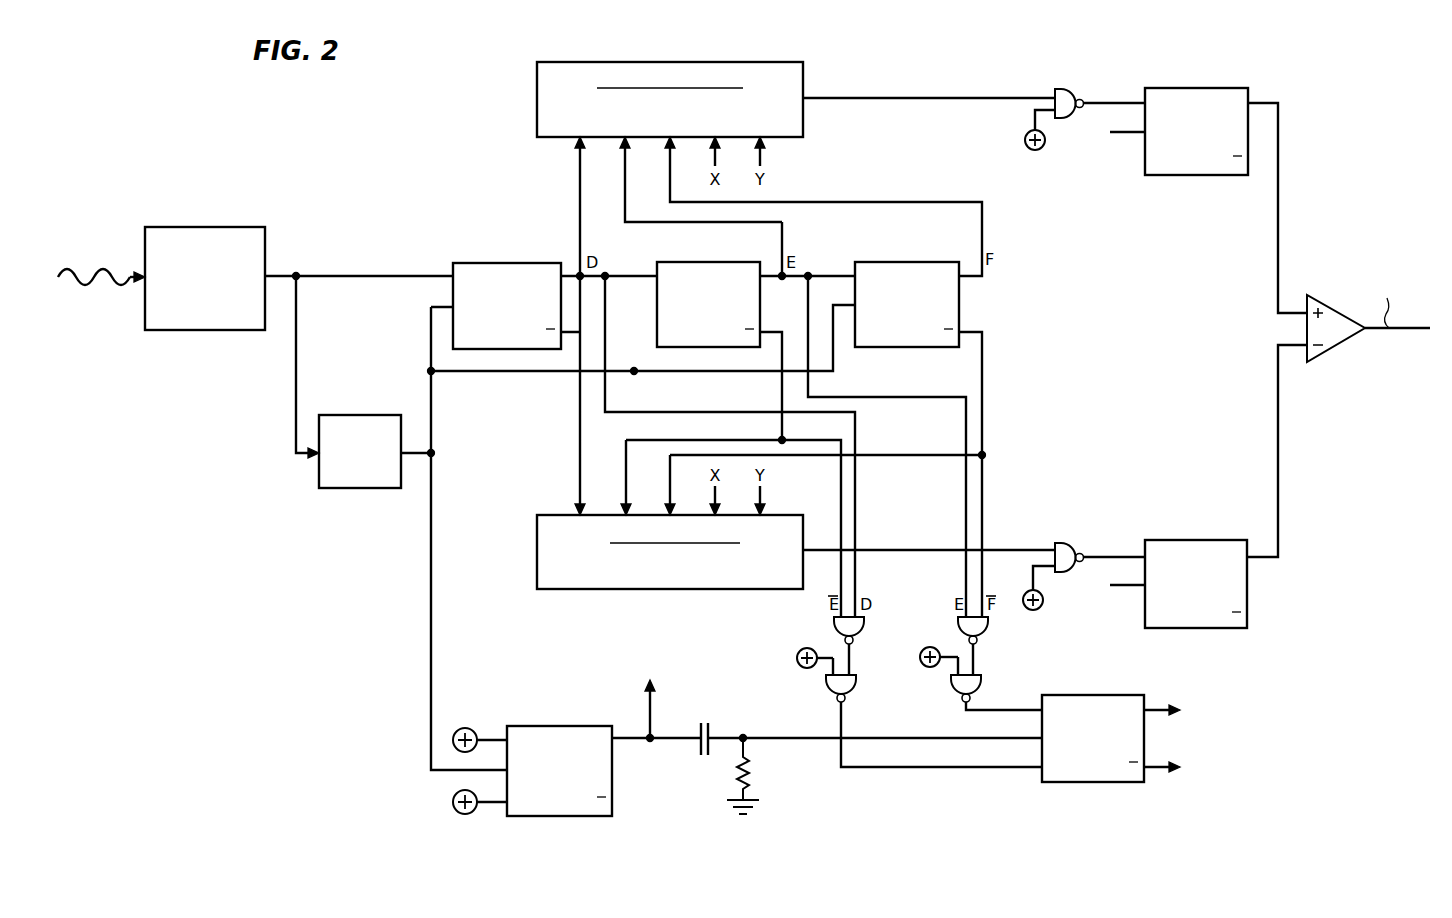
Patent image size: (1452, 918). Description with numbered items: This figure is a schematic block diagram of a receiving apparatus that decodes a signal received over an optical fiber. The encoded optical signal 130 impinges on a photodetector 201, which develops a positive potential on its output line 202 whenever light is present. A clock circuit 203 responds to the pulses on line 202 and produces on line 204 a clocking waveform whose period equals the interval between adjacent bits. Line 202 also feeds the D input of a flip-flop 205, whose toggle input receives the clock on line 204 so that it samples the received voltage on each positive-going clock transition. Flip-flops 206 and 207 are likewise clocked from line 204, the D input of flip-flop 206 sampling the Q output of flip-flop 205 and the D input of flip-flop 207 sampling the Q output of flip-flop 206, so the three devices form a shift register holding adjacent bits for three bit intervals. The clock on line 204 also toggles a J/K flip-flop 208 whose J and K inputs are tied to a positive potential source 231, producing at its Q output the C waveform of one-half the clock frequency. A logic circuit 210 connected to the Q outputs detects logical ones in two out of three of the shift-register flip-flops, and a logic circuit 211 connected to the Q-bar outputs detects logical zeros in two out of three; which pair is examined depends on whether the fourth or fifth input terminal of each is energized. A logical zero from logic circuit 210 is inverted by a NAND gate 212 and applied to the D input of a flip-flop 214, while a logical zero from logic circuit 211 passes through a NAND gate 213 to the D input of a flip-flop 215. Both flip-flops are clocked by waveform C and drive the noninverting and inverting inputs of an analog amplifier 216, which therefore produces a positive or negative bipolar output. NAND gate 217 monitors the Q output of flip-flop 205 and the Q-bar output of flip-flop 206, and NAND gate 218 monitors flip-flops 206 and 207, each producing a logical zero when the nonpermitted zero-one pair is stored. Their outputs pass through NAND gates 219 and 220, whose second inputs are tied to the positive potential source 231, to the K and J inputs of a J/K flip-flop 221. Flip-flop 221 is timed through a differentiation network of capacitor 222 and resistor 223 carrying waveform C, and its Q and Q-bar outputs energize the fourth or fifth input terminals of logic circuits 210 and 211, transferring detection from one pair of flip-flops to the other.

The encoded optical signal 130 is at (102, 268).
The photodetector 201 is at (238, 228).
The line 202 is at (281, 274).
The clock circuit 203 is at (350, 415).
The line 204 is at (431, 418).
The flip-flop 205 is at (480, 263).
The flip-flop 206 is at (682, 262).
The flip-flop 207 is at (891, 262).
The J/K flip-flop 208 is at (567, 726).
The logic circuit 210 is at (745, 62).
The logic circuit 211 is at (676, 589).
The NAND gate 212 is at (1062, 90).
The NAND gate 213 is at (1064, 542).
The flip-flop 214 is at (1192, 88).
The flip-flop 215 is at (1187, 540).
The analog amplifier 216 is at (1328, 352).
The NAND gate 217 is at (859, 623).
The NAND gate 218 is at (983, 623).
The NAND gate 219 is at (847, 694).
The NAND gate 220 is at (981, 675).
The J/K flip-flop 221 is at (1079, 695).
The capacitor 222 is at (703, 723).
The resistor 223 is at (754, 767).
The positive voltage source 231 is at (1025, 143).